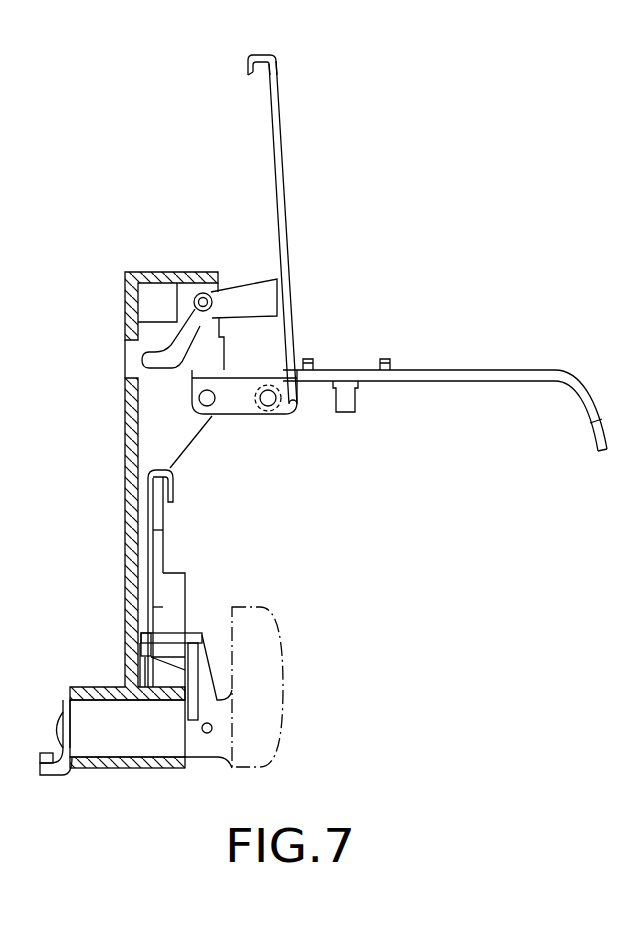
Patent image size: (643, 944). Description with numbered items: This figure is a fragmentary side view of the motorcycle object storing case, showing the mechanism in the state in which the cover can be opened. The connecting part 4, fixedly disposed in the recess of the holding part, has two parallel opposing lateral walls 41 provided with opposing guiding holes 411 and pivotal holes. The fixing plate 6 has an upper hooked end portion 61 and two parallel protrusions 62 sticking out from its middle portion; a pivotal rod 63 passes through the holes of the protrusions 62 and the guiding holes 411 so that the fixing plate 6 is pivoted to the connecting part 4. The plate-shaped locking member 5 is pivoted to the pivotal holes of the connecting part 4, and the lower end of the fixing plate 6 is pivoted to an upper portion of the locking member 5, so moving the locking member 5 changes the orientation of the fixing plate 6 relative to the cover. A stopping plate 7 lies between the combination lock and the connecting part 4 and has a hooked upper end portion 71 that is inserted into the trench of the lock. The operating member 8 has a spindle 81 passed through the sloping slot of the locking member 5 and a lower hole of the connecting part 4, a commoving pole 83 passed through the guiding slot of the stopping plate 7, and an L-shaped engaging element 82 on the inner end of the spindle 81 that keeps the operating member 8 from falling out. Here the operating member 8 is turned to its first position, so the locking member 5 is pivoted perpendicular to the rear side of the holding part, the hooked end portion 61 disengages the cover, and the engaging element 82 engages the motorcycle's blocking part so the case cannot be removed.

The connecting part 4 is at (125, 312).
The lateral walls 41 is at (160, 413).
The guiding holes 411 is at (178, 322).
The locking member 5 is at (452, 373).
The fixing plate 6 is at (290, 252).
The upper hooked end portion 61 is at (248, 76).
The protrusions 62 is at (248, 298).
The pivotal rod 63 is at (190, 335).
The stopping plate 7 is at (152, 537).
The hooked upper end portion 71 is at (174, 487).
The operating member 8 is at (268, 680).
The spindle 81 is at (105, 710).
The L-shaped engaging element 82 is at (53, 745).
The commoving pole 83 is at (170, 635).